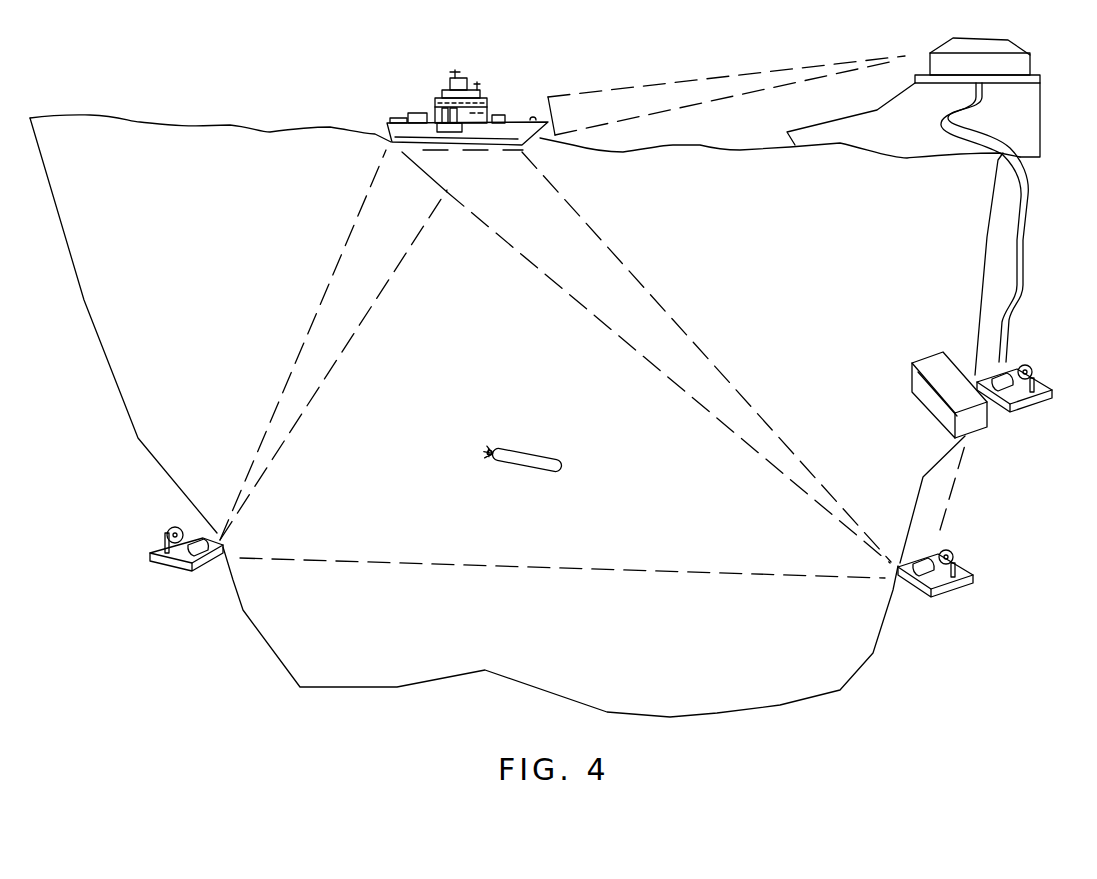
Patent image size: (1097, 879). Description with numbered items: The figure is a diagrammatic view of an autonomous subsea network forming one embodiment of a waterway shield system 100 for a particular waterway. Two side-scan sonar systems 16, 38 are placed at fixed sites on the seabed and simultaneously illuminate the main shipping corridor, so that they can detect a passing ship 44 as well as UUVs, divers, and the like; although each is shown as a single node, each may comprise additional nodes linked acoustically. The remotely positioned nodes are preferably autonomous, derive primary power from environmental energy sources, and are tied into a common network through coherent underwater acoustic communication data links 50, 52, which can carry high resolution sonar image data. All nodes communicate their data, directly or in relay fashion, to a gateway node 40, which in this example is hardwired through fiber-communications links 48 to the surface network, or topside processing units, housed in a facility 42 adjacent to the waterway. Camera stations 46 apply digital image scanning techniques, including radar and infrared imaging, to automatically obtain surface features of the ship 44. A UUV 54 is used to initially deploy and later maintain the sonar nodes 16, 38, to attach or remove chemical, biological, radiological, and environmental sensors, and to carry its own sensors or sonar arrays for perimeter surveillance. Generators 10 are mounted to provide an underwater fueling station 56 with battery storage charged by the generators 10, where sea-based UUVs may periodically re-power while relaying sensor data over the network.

The waterway shield system 100 is at (178, 98).
The ship 44 is at (412, 132).
The camera stations 46 is at (617, 103).
The facility 42 is at (960, 50).
The fiber-communications links 48 is at (1022, 238).
The underwater fueling station 56 is at (923, 402).
The gateway node 40 is at (1034, 423).
The coherent underwater acoustic communication data link 52 is at (948, 507).
The side-scan sonar system 16 is at (256, 518).
The coherent underwater acoustic communication data link 50 is at (467, 563).
The UUV 54 is at (543, 467).
The generators 10 is at (167, 533).
The side-scan sonar system 38 is at (977, 612).